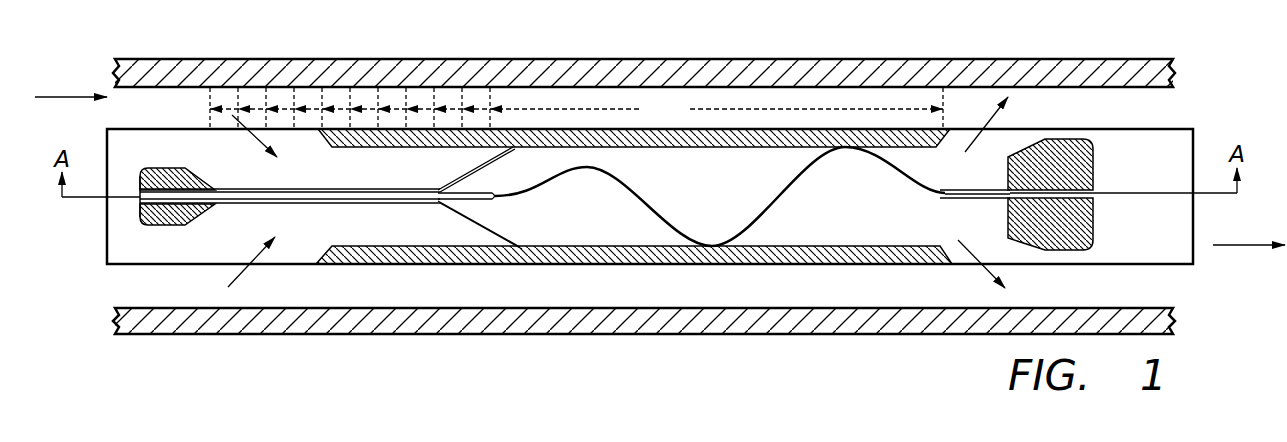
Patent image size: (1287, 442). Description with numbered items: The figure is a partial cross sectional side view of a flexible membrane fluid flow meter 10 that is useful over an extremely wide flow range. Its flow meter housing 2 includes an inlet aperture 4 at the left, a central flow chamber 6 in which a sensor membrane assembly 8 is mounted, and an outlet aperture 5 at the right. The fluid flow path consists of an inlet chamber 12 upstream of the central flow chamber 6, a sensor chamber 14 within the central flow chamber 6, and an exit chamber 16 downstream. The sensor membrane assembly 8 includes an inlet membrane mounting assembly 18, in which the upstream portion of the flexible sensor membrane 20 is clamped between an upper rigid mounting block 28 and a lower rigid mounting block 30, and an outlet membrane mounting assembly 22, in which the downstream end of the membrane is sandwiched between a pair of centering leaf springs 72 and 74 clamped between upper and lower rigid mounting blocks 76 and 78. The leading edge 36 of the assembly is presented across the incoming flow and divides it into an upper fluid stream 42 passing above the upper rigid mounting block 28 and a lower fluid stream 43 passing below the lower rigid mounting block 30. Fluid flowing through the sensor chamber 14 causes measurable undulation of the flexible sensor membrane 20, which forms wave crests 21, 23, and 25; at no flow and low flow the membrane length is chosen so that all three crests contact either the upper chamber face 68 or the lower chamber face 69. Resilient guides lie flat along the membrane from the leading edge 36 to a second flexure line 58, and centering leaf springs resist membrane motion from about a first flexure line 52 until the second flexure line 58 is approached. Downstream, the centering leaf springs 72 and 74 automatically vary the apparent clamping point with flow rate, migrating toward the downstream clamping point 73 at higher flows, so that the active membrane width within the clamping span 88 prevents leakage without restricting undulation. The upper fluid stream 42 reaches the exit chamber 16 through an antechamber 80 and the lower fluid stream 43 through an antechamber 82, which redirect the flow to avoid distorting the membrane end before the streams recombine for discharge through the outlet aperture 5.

The flow meter housing 2 is at (748, 335).
The inlet aperture 4 is at (62, 95).
The outlet aperture 5 is at (1240, 245).
The central flow chamber 6 is at (700, 265).
The sensor membrane assembly 8 is at (145, 175).
The flexible membrane fluid flow meter 10 is at (644, 219).
The inlet chamber 12 is at (170, 120).
The sensor chamber 14 is at (745, 179).
The exit chamber 16 is at (1133, 113).
The inlet membrane mounting assembly 18 is at (400, 203).
The flexible sensor membrane 20 is at (648, 210).
The wave crest 21 is at (587, 169).
The outlet membrane mounting assembly 22 is at (1098, 186).
The wave crest 23 is at (718, 245).
The wave crest 25 is at (806, 152).
The upper rigid mounting block 28 is at (178, 168).
The lower rigid mounting block 30 is at (208, 220).
The leading edge 36 is at (140, 206).
The upper fluid stream 42 is at (250, 134).
The lower fluid stream 43 is at (250, 268).
The first flexure line 52 is at (494, 199).
The second flexure line 58 is at (432, 188).
The upper chamber face 68 is at (680, 148).
The lower chamber face 69 is at (850, 245).
The centering leaf spring 72 is at (962, 189).
The downstream clamping point 73 is at (1002, 189).
The centering leaf spring 74 is at (962, 200).
The upper rigid mounting block 76 is at (1097, 160).
The lower rigid mounting block 78 is at (1097, 228).
The antechamber 80 is at (995, 114).
The antechamber 82 is at (998, 280).
The clamping span 88 is at (576, 108).